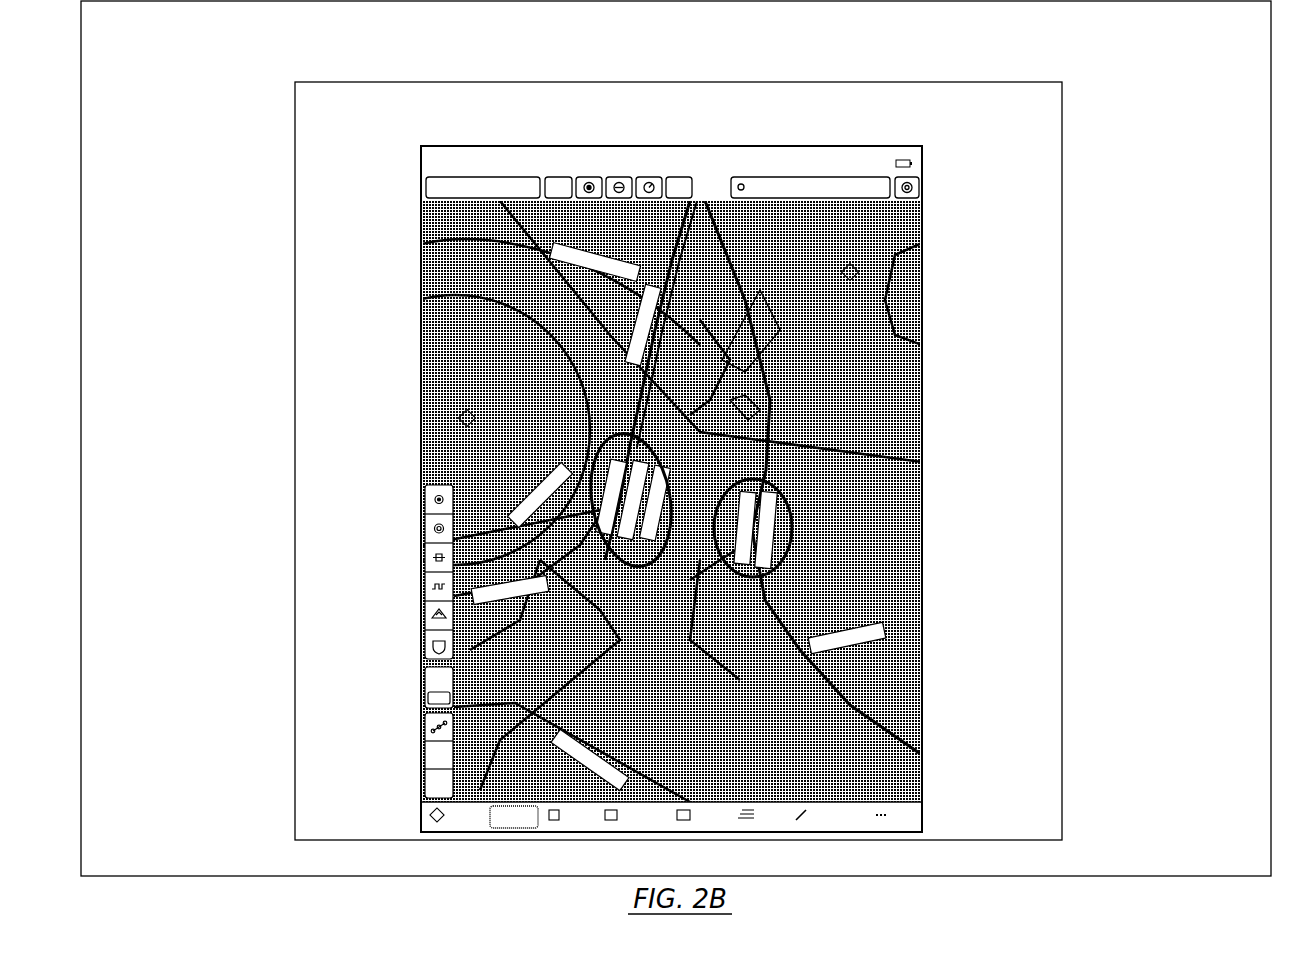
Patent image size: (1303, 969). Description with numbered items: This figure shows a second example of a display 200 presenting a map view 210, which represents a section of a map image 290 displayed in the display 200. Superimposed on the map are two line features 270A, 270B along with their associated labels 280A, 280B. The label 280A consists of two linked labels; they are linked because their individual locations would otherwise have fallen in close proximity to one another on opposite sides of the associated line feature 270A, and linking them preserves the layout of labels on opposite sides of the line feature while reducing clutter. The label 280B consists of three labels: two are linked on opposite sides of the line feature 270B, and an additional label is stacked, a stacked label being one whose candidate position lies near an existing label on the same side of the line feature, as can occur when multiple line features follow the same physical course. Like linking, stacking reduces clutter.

The display 200 is at (662, 41).
The map view 210 is at (662, 114).
The map image 290 is at (907, 225).
The line feature 270A is at (776, 450).
The line feature 270B is at (633, 418).
The label 280A is at (792, 538).
The label 280B is at (598, 512).